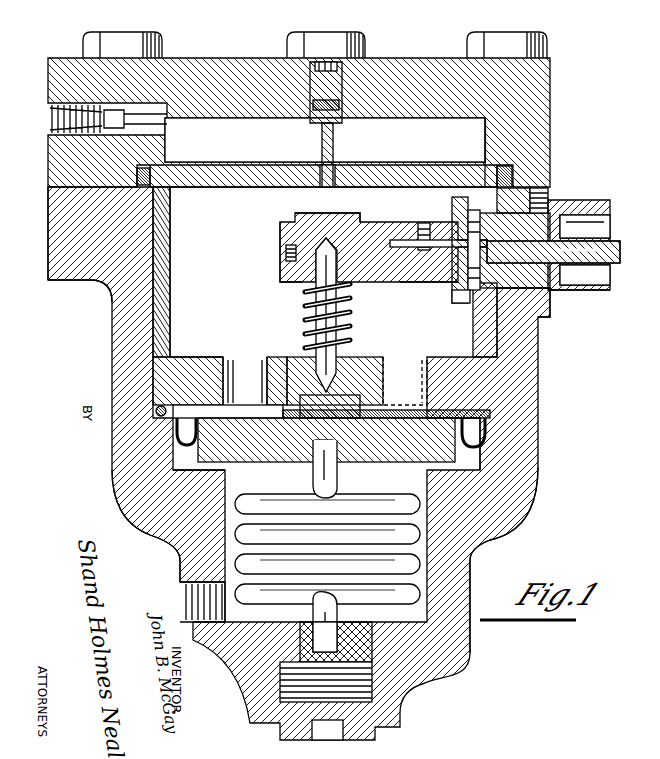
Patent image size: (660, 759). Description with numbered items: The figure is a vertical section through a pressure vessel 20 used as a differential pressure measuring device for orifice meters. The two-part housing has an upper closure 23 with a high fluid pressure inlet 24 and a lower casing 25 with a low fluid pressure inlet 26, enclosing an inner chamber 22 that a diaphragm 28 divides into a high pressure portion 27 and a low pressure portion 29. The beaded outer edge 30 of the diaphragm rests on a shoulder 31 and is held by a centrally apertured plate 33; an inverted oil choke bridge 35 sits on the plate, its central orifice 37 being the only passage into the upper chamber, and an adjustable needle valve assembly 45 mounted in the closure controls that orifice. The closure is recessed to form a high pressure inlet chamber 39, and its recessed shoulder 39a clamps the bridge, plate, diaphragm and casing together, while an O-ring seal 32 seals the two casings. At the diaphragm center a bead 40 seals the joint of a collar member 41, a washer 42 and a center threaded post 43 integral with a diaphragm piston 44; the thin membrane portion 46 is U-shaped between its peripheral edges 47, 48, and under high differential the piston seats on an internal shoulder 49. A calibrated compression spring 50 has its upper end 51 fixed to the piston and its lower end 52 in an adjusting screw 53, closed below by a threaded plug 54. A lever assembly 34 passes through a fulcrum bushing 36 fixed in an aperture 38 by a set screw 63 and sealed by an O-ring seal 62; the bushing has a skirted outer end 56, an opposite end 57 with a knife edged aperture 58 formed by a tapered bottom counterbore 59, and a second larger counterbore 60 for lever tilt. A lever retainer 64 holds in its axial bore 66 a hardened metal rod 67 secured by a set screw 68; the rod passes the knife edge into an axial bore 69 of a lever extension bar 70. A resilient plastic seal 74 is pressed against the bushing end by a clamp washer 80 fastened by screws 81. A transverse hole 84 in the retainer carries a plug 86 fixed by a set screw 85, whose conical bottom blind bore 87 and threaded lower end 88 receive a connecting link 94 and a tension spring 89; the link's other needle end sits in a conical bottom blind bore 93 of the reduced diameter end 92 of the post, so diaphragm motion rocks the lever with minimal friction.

The pressure vessel 20 is at (81, 298).
The inner chamber 22 is at (158, 361).
The upper closure 23 is at (50, 60).
The high fluid pressure inlet 24 is at (86, 112).
The lower casing 25 is at (52, 245).
The low fluid pressure inlet 26 is at (186, 602).
The high pressure portion 27 is at (180, 292).
The diaphragm 28 is at (176, 440).
The low pressure portion 29 is at (224, 542).
The beaded outer edge 30 is at (156, 413).
The shoulder 31 is at (182, 398).
The O-ring seal 32 is at (150, 172).
The centrally apertured plate 33 is at (183, 355).
The lever assembly 34 is at (587, 202).
The oil choke bridge 35 is at (172, 190).
The fulcrum bushing 36 is at (548, 290).
The central orifice 37 is at (334, 172).
The aperture 38 is at (540, 305).
The high pressure inlet chamber 39 is at (268, 143).
The recessed shoulder 39a is at (222, 187).
The bead 40 is at (285, 412).
The collar member 41 is at (270, 360).
The washer 42 is at (245, 381).
The center threaded post 43 is at (312, 388).
The diaphragm piston 44 is at (185, 462).
The adjustable needle valve assembly 45 is at (350, 101).
The membrane portion 46 is at (485, 440).
The peripheral edge 47 is at (398, 404).
The peripheral edge 48 is at (500, 410).
The internal shoulder 49 is at (472, 465).
The calibrated compression spring 50 is at (418, 533).
The upper end 51 is at (337, 450).
The lower end 52 is at (310, 630).
The adjusting screw 53 is at (358, 640).
The threaded plug 54 is at (380, 712).
The skirted outer end 56 is at (592, 212).
The opposite end 57 is at (478, 300).
The knife edged aperture 58 is at (456, 302).
The tapered bottom counterbore 59 is at (548, 208).
The second larger counterbore 60 is at (611, 222).
The O-ring seal 62 is at (513, 200).
The set screw 63 is at (550, 195).
The lever retainer 64 is at (430, 283).
The axial bore 66 is at (400, 248).
The hardened metal rod 67 is at (450, 250).
The set screw 68 is at (423, 226).
The axial bore 69 is at (585, 275).
The lever extension bar 70 is at (618, 262).
The resilient plastic seal 74 is at (470, 240).
The clamp washer 80 is at (484, 170).
The screws 81 is at (454, 218).
The transverse hole 84 is at (352, 246).
The set screw 85 is at (282, 248).
The plug 86 is at (300, 213).
The conical bottom blind bore 87 is at (312, 292).
The lower end 88 is at (352, 300).
The tension spring 89 is at (352, 332).
The reduced diameter end 92 is at (304, 346).
The conical bottom blind bore 93 is at (330, 404).
The connecting link 94 is at (352, 316).